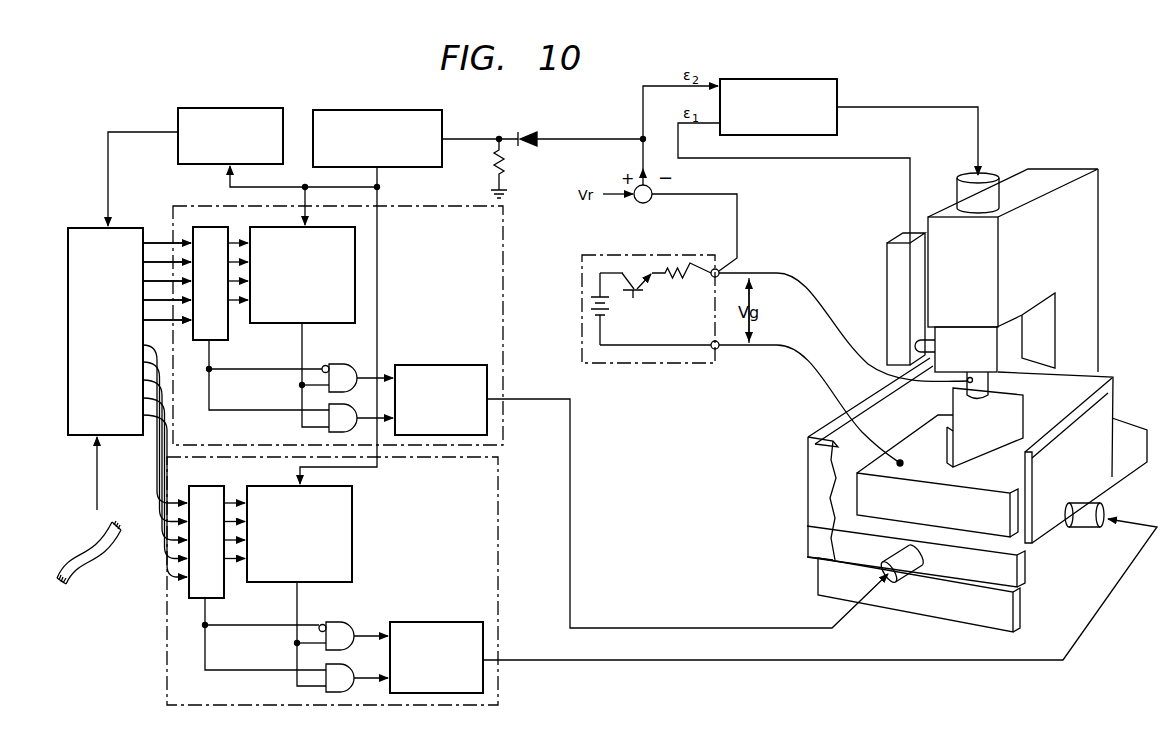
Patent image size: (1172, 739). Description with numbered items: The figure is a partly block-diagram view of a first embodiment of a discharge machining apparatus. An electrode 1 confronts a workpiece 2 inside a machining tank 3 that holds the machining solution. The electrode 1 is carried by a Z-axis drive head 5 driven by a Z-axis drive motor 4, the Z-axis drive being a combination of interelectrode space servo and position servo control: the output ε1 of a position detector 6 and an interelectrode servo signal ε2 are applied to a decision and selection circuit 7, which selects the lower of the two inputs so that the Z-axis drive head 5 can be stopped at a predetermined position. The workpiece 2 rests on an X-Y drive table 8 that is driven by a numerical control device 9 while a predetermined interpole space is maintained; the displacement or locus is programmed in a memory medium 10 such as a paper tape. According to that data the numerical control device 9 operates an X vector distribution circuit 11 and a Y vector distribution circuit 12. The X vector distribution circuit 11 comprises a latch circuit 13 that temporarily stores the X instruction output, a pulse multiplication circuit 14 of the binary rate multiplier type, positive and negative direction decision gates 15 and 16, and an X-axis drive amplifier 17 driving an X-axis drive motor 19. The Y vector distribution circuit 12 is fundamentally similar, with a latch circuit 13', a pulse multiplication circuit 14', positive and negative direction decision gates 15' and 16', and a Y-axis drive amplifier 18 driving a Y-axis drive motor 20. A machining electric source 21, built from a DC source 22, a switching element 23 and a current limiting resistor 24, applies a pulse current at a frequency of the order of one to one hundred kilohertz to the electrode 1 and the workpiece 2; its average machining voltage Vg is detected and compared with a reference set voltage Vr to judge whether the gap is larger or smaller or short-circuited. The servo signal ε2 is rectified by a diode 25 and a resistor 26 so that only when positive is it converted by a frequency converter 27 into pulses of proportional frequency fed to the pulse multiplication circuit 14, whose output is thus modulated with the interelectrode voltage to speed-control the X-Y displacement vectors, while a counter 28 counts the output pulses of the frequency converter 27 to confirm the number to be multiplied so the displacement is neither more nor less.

The electrode 1 is at (1008, 415).
The workpiece 2 is at (918, 444).
The machining tank 3 is at (1100, 410).
The Z-axis drive motor 4 is at (962, 195).
The Z-axis drive head 5 is at (1010, 342).
The position detector 6 is at (888, 264).
The decision and selection circuit 7 is at (821, 68).
The X-Y drive table 8 is at (962, 568).
The numerical control device 9 is at (132, 437).
The memory medium 10 is at (88, 554).
The X vector distribution circuit 11 is at (498, 484).
The Y vector distribution circuit 12 is at (503, 228).
The latch circuit 13 is at (227, 552).
The latch circuit 13' is at (227, 295).
The pulse multiplication circuit 14 is at (316, 534).
The pulse multiplication circuit 14' is at (302, 294).
The positive direction decision gate 15 is at (353, 624).
The positive direction decision gate 15' is at (357, 364).
The negative direction decision gate 16 is at (357, 671).
The negative direction decision gate 16' is at (329, 424).
The X-axis drive amplifier 17 is at (445, 622).
The Y-axis drive amplifier 18 is at (448, 365).
The X-axis drive motor 19 is at (1102, 530).
The Y-axis drive motor 20 is at (895, 583).
The machining electric source 21 is at (650, 330).
The DC source 22 is at (607, 312).
The switching element 23 is at (644, 285).
The current limiting resistor 24 is at (681, 279).
The diode 25 is at (533, 132).
The resistor 26 is at (506, 168).
The frequency converter 27 is at (401, 110).
The counter 28 is at (248, 108).